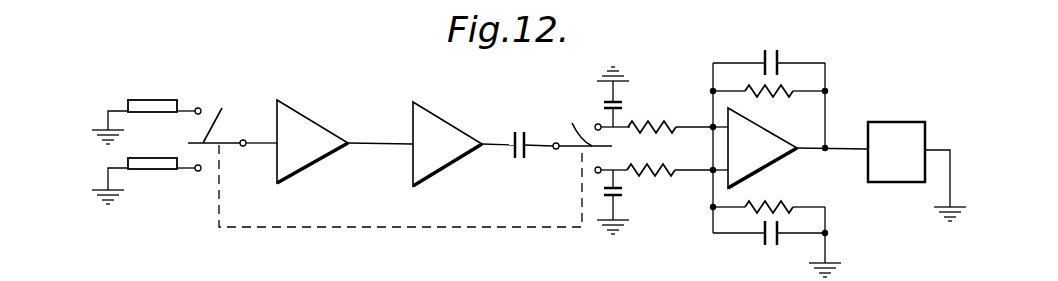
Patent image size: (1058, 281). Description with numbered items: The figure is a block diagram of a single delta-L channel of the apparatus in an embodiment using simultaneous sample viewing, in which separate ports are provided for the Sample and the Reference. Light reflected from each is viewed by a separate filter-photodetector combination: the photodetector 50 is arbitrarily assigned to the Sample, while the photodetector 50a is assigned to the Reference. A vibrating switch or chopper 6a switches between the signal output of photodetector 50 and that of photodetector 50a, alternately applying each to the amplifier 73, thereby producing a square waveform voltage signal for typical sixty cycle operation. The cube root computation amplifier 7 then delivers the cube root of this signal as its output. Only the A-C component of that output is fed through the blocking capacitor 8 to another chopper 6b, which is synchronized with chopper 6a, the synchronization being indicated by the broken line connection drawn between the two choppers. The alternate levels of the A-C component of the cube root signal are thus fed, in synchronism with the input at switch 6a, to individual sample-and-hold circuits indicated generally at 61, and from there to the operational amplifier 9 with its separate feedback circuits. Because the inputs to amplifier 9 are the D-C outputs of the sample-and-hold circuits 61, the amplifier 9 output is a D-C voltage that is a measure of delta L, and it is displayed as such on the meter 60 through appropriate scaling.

The photodetector 50 is at (158, 104).
The photodetector 50a is at (153, 163).
The vibrating switch or chopper 6a is at (232, 115).
The amplifier 73 is at (305, 140).
The cube root computation amplifier 7 is at (440, 152).
The blocking capacitor 8 is at (517, 130).
The chopper 6b is at (579, 125).
The sample-and-hold circuits 61 is at (650, 147).
The operational amplifier 9 is at (758, 160).
The meter 60 is at (900, 140).